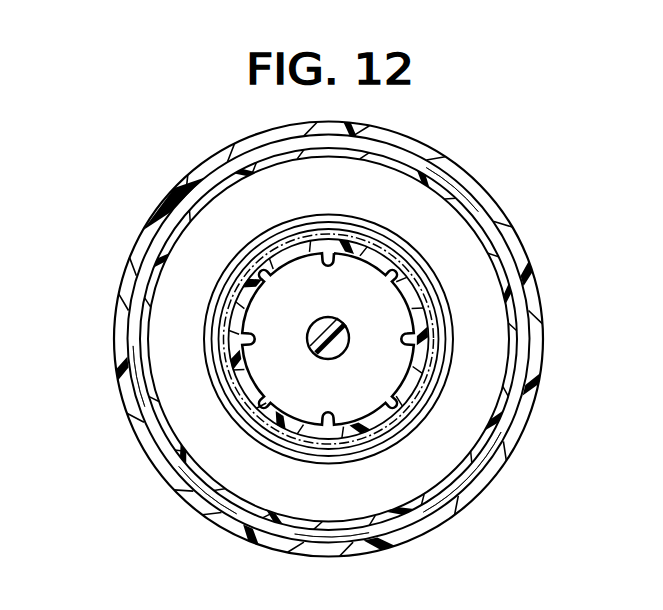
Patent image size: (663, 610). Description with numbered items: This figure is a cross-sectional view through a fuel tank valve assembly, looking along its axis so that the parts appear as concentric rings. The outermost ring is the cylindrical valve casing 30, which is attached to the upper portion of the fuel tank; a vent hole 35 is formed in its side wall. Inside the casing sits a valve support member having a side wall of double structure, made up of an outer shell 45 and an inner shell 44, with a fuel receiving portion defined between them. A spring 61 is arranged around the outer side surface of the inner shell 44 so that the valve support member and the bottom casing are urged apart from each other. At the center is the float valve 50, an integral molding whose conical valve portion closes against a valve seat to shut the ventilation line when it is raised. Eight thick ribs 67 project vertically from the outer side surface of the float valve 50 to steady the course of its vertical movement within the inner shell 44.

The valve casing 30 is at (130, 268).
The vent hole 35 is at (122, 347).
The outer shell 45 is at (178, 188).
The inner shell 44 is at (380, 246).
The float valve 50 is at (485, 306).
The spring 61 is at (432, 367).
The thick ribs 67 is at (278, 393).